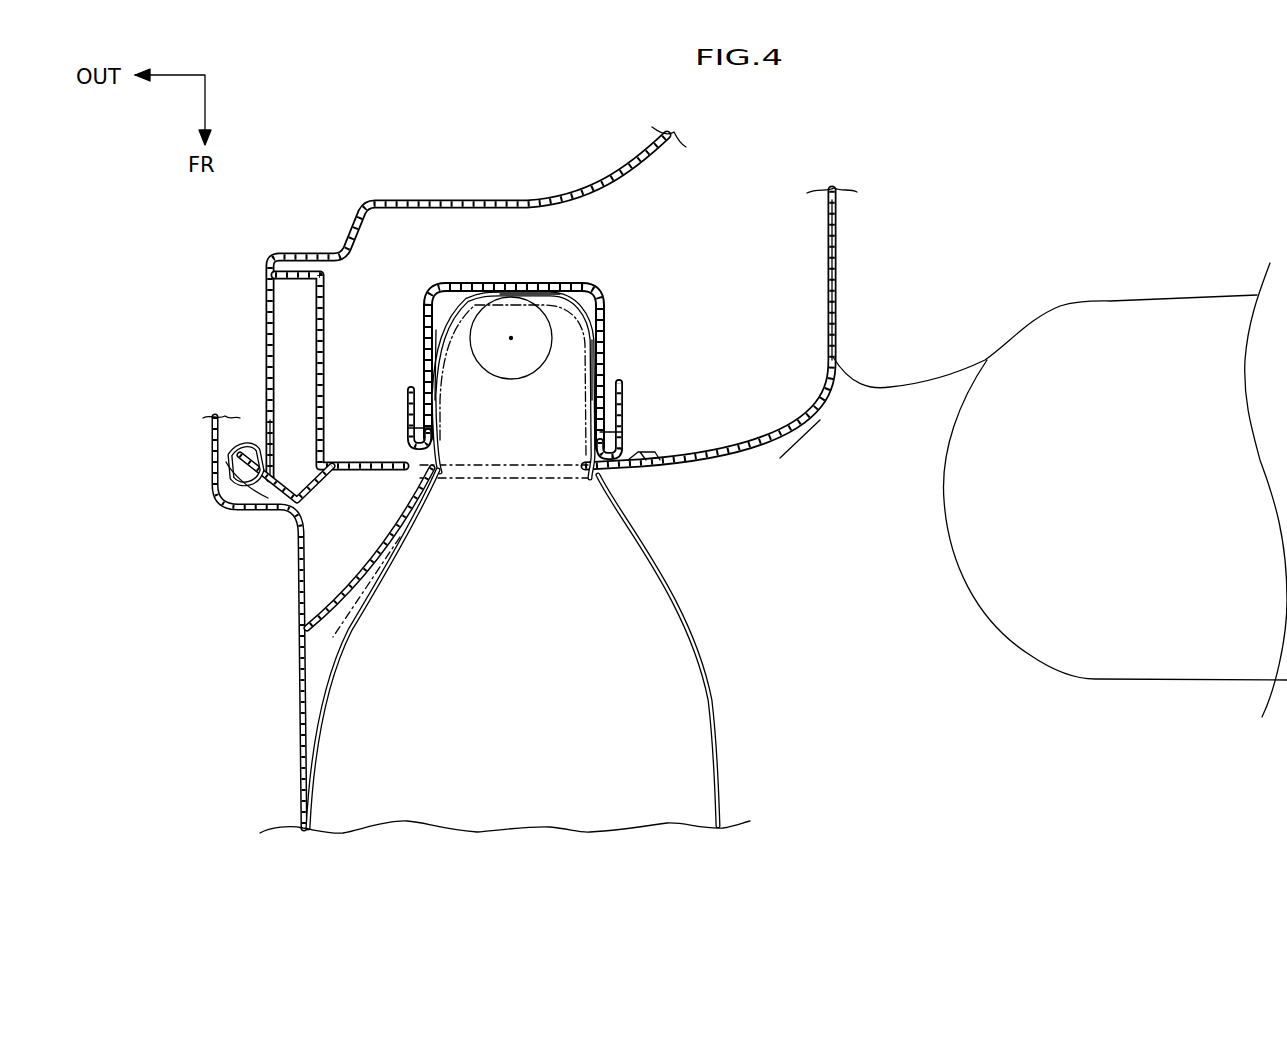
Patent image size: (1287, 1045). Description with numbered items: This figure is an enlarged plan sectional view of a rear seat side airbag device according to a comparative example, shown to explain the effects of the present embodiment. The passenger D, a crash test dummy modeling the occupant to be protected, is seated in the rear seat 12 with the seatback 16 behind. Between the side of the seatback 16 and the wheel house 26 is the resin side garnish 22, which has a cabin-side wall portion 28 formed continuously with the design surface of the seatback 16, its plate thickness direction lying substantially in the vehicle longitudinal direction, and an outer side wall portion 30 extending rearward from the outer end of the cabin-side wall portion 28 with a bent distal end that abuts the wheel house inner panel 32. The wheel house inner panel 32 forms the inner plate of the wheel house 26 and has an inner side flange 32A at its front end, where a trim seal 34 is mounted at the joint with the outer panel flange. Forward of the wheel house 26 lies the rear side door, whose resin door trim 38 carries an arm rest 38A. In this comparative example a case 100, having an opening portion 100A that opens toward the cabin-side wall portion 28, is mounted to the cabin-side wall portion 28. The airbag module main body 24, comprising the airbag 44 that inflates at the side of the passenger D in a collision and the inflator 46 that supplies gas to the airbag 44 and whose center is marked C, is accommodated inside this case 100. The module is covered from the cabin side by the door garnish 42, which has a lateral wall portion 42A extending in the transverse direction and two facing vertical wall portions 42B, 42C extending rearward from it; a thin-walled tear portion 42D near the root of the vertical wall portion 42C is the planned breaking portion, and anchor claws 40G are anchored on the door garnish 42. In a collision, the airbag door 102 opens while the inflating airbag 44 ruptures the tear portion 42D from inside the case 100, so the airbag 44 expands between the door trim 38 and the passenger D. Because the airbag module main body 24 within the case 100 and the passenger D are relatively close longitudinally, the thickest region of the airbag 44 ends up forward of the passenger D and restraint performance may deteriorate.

The rear seat 12 is at (886, 400).
The seatback 16 is at (312, 655).
The side garnish 22 is at (796, 452).
The airbag module main body 24 is at (590, 302).
The wheel house 26 is at (478, 302).
The cabin-side wall portion 28 is at (700, 455).
The outer side wall portion 30 is at (324, 346).
The wheel house inner panel 32 is at (346, 256).
The inner side flange 32A is at (266, 440).
The trim seal 34 is at (305, 497).
The door trim 38 is at (387, 548).
The arm rest 38A is at (305, 596).
The anchor claw 40G is at (405, 427).
The door garnish 42 is at (422, 482).
The lateral wall portion 42A is at (400, 472).
The vertical wall portion 42B is at (405, 388).
The vertical wall portion 42C is at (622, 390).
The tear portion 42D is at (590, 455).
The airbag 44 is at (450, 474).
The inflator 46 is at (509, 372).
The case 100 is at (561, 326).
The opening portion 100A is at (645, 455).
The airbag door 102 is at (350, 578).
The shaft axis C is at (512, 338).
The passenger D is at (1118, 665).